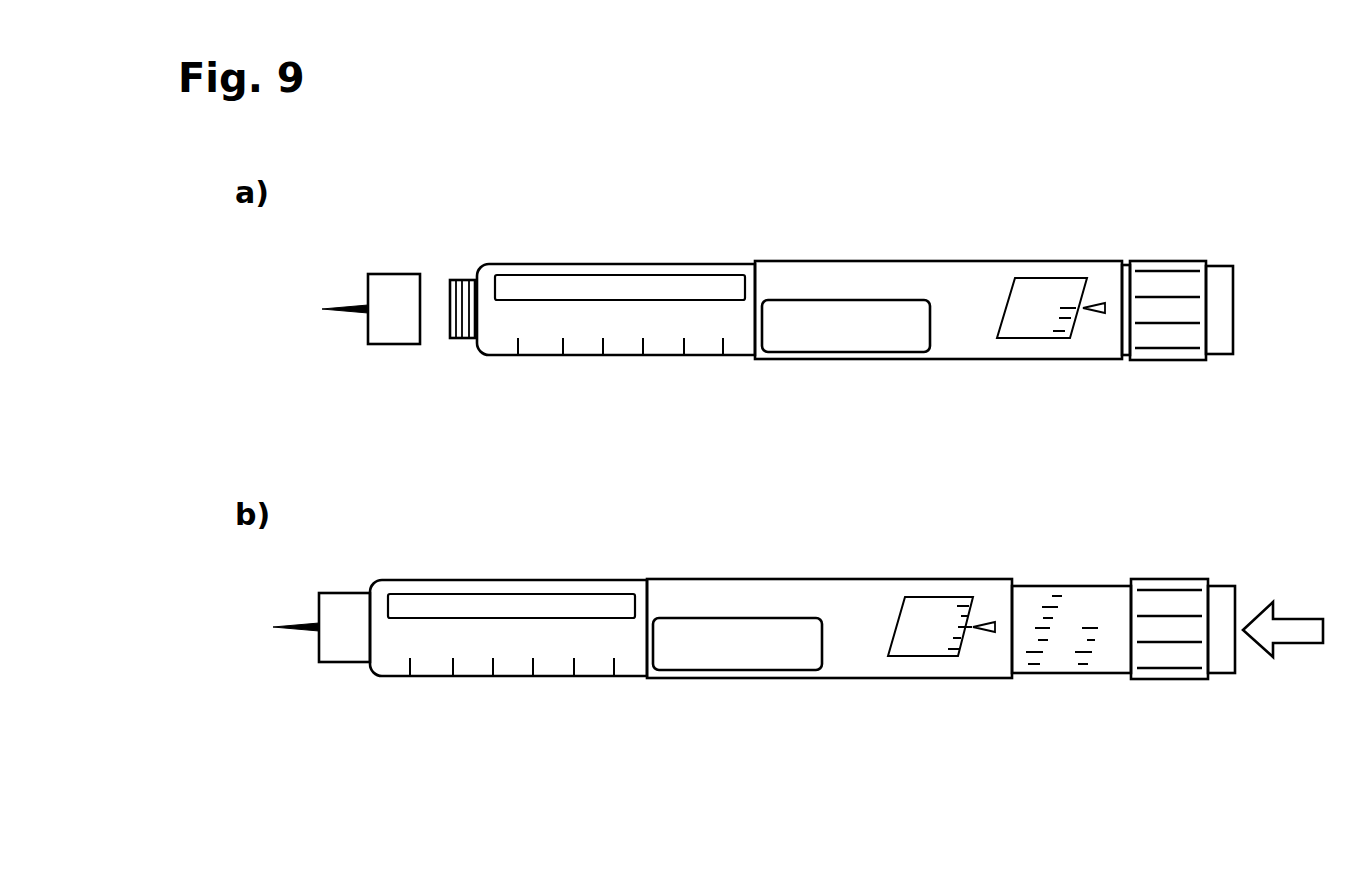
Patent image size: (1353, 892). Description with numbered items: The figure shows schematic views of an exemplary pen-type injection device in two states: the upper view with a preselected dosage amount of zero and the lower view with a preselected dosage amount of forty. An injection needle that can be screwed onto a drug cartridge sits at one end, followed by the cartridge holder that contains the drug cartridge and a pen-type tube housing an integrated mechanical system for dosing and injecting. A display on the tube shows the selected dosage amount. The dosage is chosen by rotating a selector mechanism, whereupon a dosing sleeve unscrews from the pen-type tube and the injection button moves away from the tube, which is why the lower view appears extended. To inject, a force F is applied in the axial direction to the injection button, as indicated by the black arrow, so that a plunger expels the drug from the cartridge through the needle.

The force F is at (1305, 630).